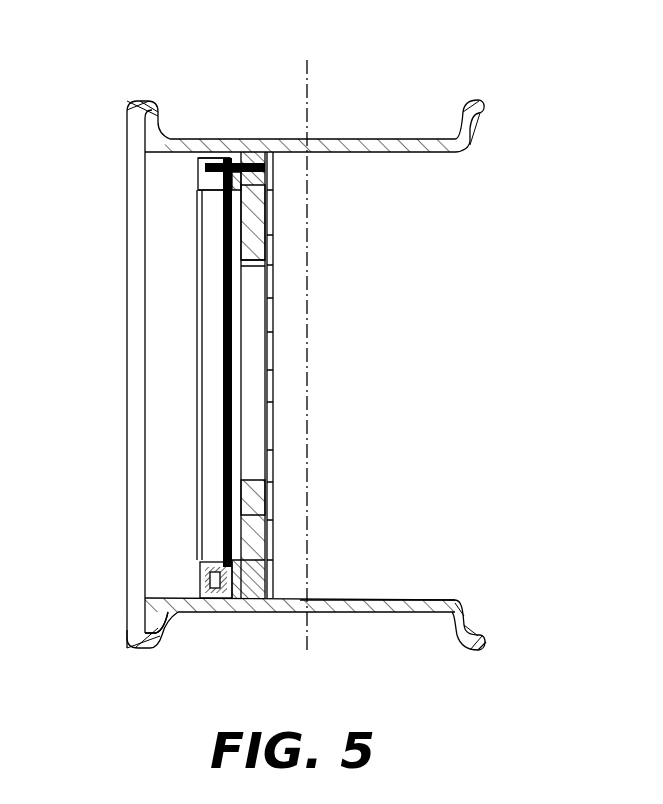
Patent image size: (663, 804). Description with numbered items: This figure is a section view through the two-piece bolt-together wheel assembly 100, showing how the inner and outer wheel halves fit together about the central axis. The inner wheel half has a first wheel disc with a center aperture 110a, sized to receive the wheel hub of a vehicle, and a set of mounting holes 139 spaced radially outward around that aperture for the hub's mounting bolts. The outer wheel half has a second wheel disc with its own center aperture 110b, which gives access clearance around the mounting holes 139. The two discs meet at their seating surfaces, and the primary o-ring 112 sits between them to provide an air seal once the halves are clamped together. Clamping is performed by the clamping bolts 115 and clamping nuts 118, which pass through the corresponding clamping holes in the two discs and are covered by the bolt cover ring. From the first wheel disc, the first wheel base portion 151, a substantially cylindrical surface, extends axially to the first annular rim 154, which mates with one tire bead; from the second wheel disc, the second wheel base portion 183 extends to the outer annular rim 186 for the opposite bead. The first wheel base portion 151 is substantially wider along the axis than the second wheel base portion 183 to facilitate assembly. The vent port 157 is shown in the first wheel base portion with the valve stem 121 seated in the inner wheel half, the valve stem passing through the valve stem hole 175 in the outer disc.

The wheel assembly 100 is at (148, 68).
The center aperture 110a is at (268, 328).
The center aperture 110b is at (222, 371).
The primary o-ring 112 is at (255, 152).
The clamping bolts 115 is at (276, 372).
The clamping nuts 118 is at (205, 586).
The valve stem 121 is at (205, 170).
The mounting holes 139 is at (266, 240).
The first wheel base portion 151 is at (365, 612).
The first annular rim 154 is at (487, 643).
The vent port 157 is at (263, 152).
The valve stem hole 175 is at (233, 160).
The second wheel base portion 183 is at (172, 632).
The outer annular rim 186 is at (128, 641).